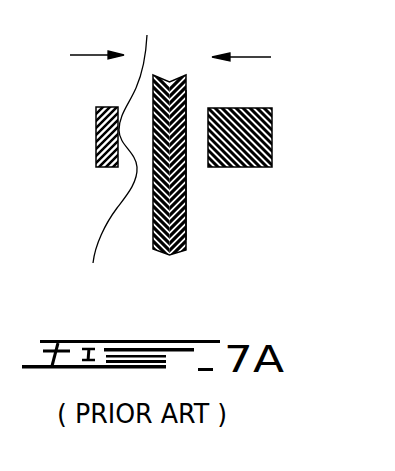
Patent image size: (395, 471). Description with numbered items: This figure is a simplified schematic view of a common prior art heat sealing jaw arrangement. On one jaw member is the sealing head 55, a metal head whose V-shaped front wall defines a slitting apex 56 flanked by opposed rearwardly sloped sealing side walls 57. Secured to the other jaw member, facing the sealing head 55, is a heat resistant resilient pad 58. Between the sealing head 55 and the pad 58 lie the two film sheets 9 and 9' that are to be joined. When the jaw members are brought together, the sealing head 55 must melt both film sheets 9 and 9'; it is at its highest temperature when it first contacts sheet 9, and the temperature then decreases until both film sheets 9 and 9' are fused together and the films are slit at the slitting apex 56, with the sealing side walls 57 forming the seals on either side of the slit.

The film sheet 9 is at (154, 193).
The film sheet 9' is at (214, 190).
The sealing head 55 is at (96, 143).
The slitting apex 56 is at (105, 190).
The sealing side walls 57 is at (70, 210).
The heat resistant resilient pad 58 is at (272, 142).